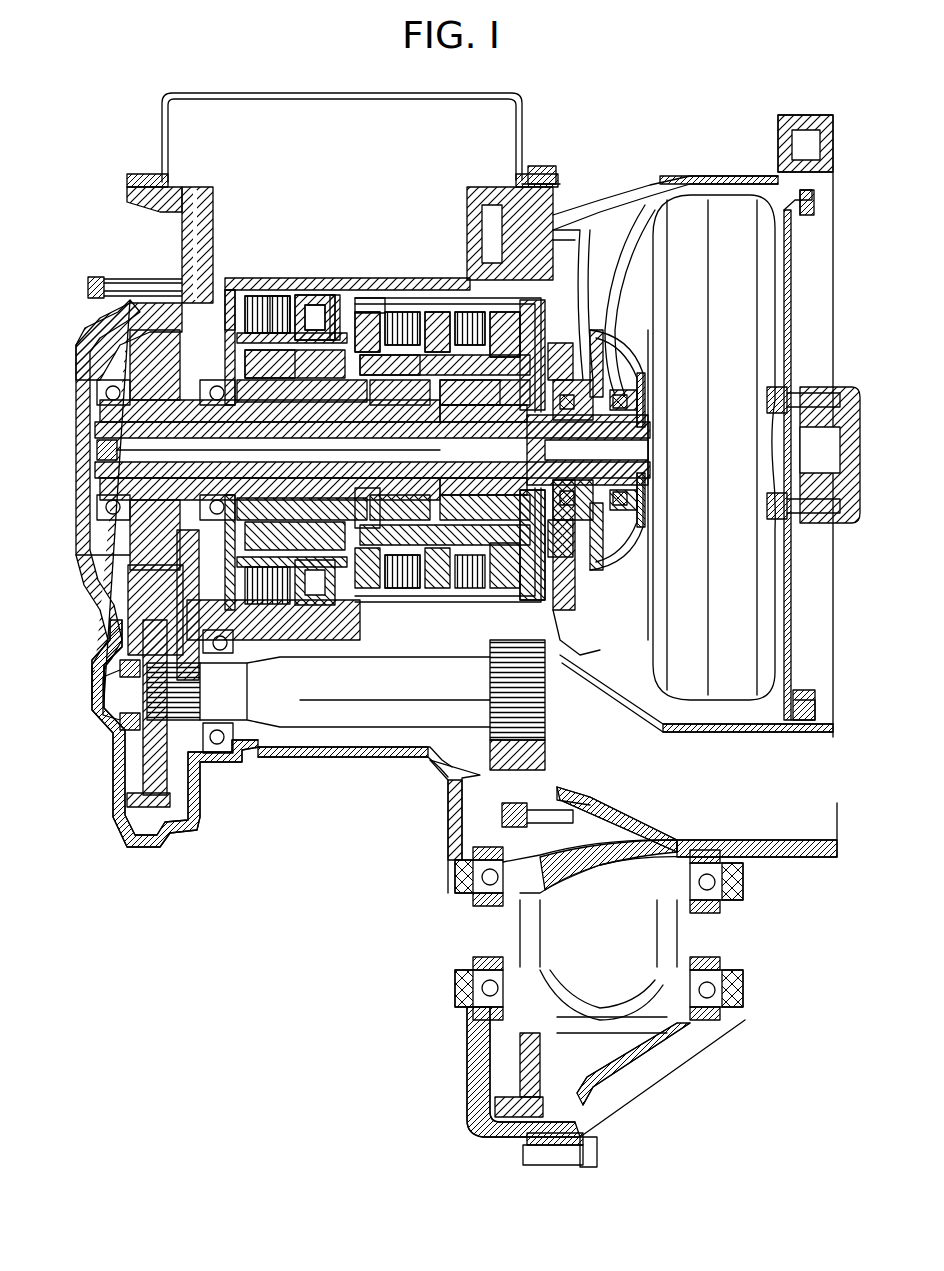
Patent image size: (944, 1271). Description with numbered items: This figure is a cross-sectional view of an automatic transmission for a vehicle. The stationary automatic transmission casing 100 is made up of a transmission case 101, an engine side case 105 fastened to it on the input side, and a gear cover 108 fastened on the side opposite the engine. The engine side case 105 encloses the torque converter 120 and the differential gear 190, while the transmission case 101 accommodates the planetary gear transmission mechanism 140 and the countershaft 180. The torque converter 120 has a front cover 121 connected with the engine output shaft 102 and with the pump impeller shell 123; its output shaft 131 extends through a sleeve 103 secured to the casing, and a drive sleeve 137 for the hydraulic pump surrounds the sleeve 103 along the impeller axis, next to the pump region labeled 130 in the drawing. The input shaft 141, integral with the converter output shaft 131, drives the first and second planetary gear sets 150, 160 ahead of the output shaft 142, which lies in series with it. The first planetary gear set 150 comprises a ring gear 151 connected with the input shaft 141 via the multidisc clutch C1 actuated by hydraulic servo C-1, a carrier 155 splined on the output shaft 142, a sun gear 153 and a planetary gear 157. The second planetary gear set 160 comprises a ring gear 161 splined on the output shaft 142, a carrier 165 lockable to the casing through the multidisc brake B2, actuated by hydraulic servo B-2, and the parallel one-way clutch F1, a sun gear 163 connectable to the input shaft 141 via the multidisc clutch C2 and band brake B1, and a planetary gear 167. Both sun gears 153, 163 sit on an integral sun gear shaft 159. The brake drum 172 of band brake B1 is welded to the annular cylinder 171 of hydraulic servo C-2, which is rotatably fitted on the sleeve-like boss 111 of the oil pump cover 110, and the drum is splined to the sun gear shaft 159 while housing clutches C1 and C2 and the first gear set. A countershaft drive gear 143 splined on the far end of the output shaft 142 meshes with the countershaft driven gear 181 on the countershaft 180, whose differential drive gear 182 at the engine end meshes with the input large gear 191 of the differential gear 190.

The automatic transmission casing 100 is at (560, 190).
The transmission case 101 is at (338, 757).
The engine output shaft 102 is at (836, 428).
The sleeve 103 is at (612, 262).
The engine side case 105 is at (622, 192).
The gear cover 108 is at (118, 277).
The oil pump cover 110 is at (534, 166).
The sleeve-like boss 111 is at (586, 230).
The torque converter 120 is at (695, 195).
The front cover 121 is at (791, 295).
The pump impeller shell 123 is at (658, 176).
The oil pump 130 is at (565, 600).
The torque converter output shaft 131 is at (610, 462).
The drive sleeve 137 is at (655, 540).
The planetary gear transmission mechanism 140 is at (362, 278).
The input shaft 141 is at (608, 680).
The output shaft 142 is at (100, 450).
The countershaft drive gear 143 is at (128, 350).
The first planetary gear set 150 is at (485, 595).
The ring gear 151 is at (372, 315).
The sun gear 153 is at (455, 450).
The carrier 155 is at (390, 355).
The planetary gear 157 is at (370, 298).
The sun gear shaft 159 is at (270, 450).
The second planetary gear set 160 is at (275, 620).
The ring gear 161 is at (262, 296).
The sun gear 163 is at (310, 295).
The carrier 165 is at (318, 305).
The planetary gear 167 is at (290, 350).
The annular cylinder 171 is at (425, 590).
The brake drum 172 is at (400, 590).
The countershaft 180 is at (305, 740).
The countershaft driven gear 181 is at (147, 785).
The differential drive gear 182 is at (548, 725).
The differential gear 190 is at (645, 1021).
The input large gear 191 is at (505, 780).
The band brake B1 is at (440, 312).
The multidisc brake B2 is at (280, 300).
The hydraulic servo B-2 is at (230, 290).
The multidisc clutch C1 is at (405, 312).
The multidisc clutch C2 is at (470, 312).
The hydraulic servo C-1 is at (455, 380).
The hydraulic servo C-2 is at (505, 312).
The one-way clutch F1 is at (336, 300).